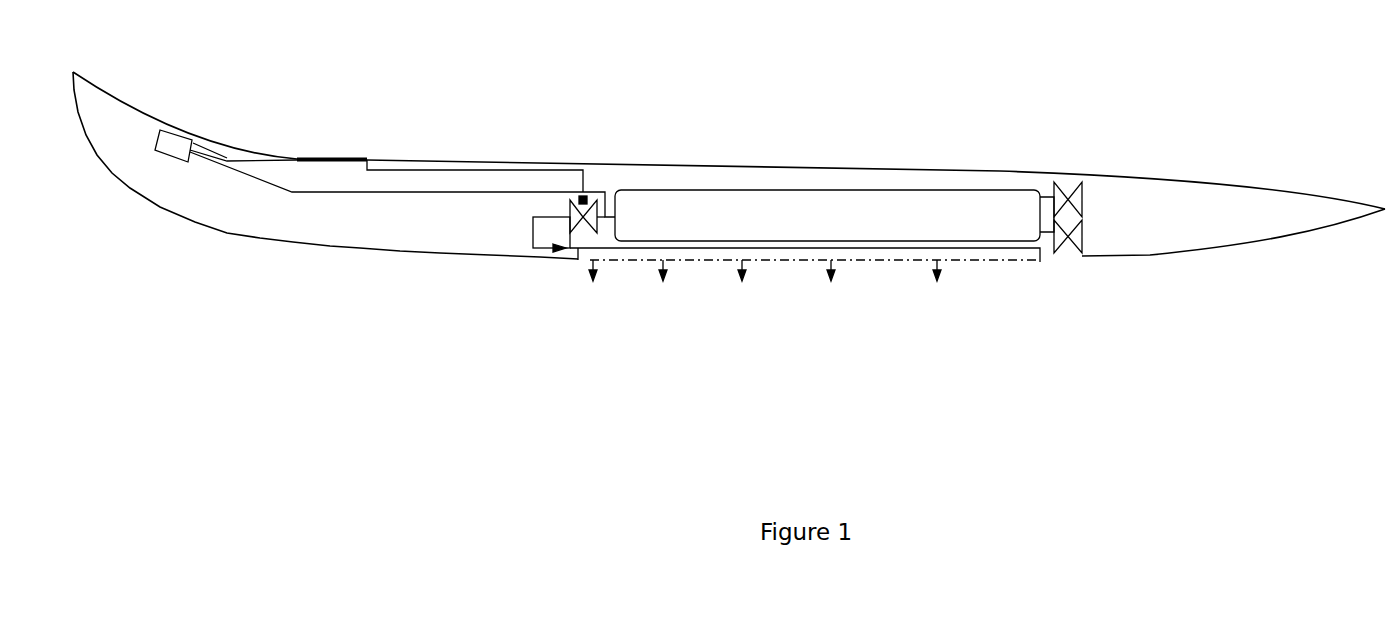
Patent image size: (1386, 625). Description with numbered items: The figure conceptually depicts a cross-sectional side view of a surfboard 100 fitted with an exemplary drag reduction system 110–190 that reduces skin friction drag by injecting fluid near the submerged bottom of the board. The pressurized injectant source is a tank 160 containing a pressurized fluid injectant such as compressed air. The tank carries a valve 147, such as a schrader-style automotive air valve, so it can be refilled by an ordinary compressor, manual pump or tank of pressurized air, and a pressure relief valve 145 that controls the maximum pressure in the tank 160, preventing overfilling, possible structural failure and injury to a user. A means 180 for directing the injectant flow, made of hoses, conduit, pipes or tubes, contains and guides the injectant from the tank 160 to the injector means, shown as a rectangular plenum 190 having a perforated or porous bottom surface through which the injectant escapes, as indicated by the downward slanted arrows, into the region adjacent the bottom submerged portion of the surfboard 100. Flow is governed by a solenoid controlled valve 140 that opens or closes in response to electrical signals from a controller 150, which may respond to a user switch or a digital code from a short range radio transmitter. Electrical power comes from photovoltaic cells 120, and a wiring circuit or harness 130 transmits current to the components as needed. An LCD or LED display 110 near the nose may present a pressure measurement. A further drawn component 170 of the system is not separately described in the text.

The surfboard 100 is at (1167, 205).
The LCD or LED display 110 is at (164, 143).
The photovoltaic cells 120 is at (320, 158).
The wiring circuit or harness 130 is at (392, 168).
The solenoid controlled valve 140 is at (580, 208).
The controller 150 is at (585, 197).
The tank 160 is at (708, 205).
The fuselage floor 170 is at (332, 192).
The means for directing the injectant flow 180 is at (528, 252).
The plenum 190 is at (805, 259).
The pressure relief valve 145 is at (1067, 197).
The valve 147 is at (1063, 237).